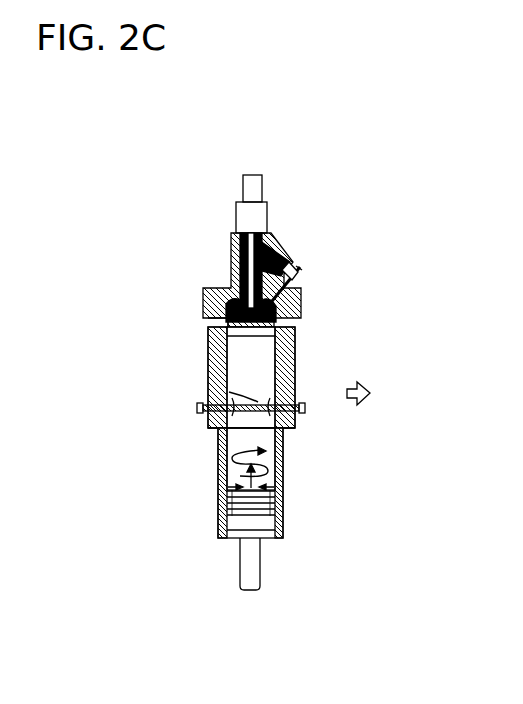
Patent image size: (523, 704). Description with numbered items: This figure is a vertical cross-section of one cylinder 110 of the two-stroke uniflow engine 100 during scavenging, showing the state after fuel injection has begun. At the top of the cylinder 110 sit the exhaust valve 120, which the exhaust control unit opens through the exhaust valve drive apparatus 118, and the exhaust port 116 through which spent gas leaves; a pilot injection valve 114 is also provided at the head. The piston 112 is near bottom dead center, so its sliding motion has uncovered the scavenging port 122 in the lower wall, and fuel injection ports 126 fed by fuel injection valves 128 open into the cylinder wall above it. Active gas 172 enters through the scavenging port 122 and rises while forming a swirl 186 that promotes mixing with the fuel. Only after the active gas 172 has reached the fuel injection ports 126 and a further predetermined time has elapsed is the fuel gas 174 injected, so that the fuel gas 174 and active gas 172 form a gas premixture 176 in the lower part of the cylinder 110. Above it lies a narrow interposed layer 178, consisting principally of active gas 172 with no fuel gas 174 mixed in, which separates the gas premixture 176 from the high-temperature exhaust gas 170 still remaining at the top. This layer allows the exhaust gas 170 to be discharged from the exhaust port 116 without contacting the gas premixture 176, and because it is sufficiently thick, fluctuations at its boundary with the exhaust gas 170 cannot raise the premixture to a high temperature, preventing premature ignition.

The two-stroke uniflow engine 100 is at (247, 156).
The cylinder 110 is at (295, 332).
The piston 112 is at (224, 528).
The pilot injection valve 114 is at (320, 280).
The exhaust port 116 is at (232, 292).
The exhaust valve drive apparatus 118 is at (250, 219).
The exhaust valve 120 is at (276, 244).
The scavenging port 122 is at (224, 488).
The fuel injection ports 126 is at (205, 404).
The fuel injection valves 128 is at (208, 412).
The exhaust gas 170 is at (215, 323).
The active gas 172 is at (271, 448).
The fuel gas 174 is at (232, 400).
The gas premixture 176 is at (271, 381).
The narrow interposed layer 178 is at (238, 337).
The swirl 186 is at (224, 465).